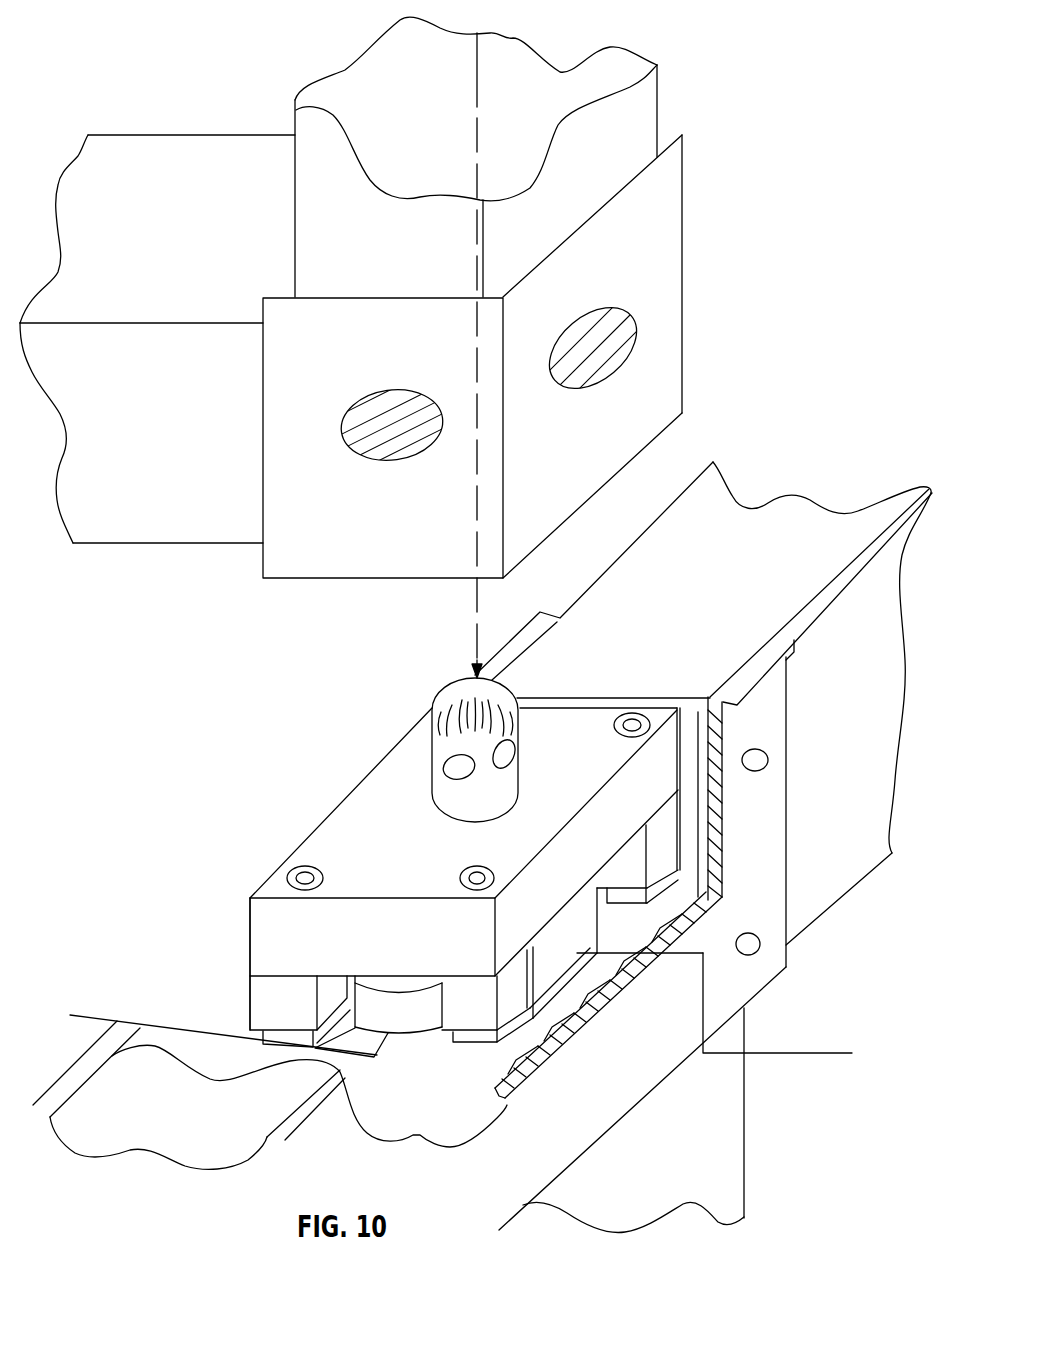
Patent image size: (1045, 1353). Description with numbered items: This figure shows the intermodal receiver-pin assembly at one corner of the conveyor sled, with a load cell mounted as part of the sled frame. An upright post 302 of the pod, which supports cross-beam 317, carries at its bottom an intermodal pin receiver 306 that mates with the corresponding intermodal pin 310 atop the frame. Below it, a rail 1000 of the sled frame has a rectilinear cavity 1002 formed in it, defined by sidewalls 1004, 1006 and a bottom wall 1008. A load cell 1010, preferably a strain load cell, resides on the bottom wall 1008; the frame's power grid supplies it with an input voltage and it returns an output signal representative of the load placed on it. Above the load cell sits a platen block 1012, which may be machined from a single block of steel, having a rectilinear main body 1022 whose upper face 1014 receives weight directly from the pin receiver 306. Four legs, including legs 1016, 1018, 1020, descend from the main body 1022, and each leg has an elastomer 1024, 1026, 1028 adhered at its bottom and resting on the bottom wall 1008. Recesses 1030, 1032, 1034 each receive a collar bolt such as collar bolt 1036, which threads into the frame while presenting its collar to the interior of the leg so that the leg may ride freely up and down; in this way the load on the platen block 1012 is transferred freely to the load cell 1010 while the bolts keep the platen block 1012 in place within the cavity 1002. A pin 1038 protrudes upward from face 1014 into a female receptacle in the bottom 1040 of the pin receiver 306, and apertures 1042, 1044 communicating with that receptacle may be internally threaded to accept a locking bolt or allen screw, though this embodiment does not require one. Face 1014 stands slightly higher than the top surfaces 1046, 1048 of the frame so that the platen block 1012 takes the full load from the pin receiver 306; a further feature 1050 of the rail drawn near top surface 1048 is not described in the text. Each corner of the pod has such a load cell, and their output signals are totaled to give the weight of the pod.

The upright post 302 is at (601, 178).
The intermodal pin receiver 306 is at (690, 368).
The intermodal pin 310 is at (331, 780).
The cross-beam 317 is at (149, 428).
The rail 1000 is at (872, 658).
The rectilinear cavity 1002 is at (223, 960).
The sidewall 1004 is at (636, 897).
The sidewall 1006 is at (680, 620).
The bottom wall 1008 is at (447, 1098).
The load cell 1010 is at (408, 998).
The platen block 1012 is at (326, 851).
The face 1014 is at (440, 848).
The leg 1016 is at (250, 1001).
The leg 1018 is at (462, 1018).
The leg 1020 is at (658, 847).
The rectilinear main body 1022 is at (560, 757).
The elastomer 1024 is at (328, 1018).
The elastomer 1026 is at (513, 1027).
The elastomer 1028 is at (663, 897).
The recess 1030 is at (287, 878).
The recess 1032 is at (460, 881).
The recess 1034 is at (637, 713).
The collar bolt 1036 is at (480, 877).
The pin 1038 is at (444, 698).
The bottom of pin receiver 1040 is at (412, 578).
The aperture 1042 is at (372, 463).
The aperture 1044 is at (600, 314).
The top surface 1046 is at (617, 663).
The top surface 1048 is at (766, 760).
The hole 1050 is at (760, 943).